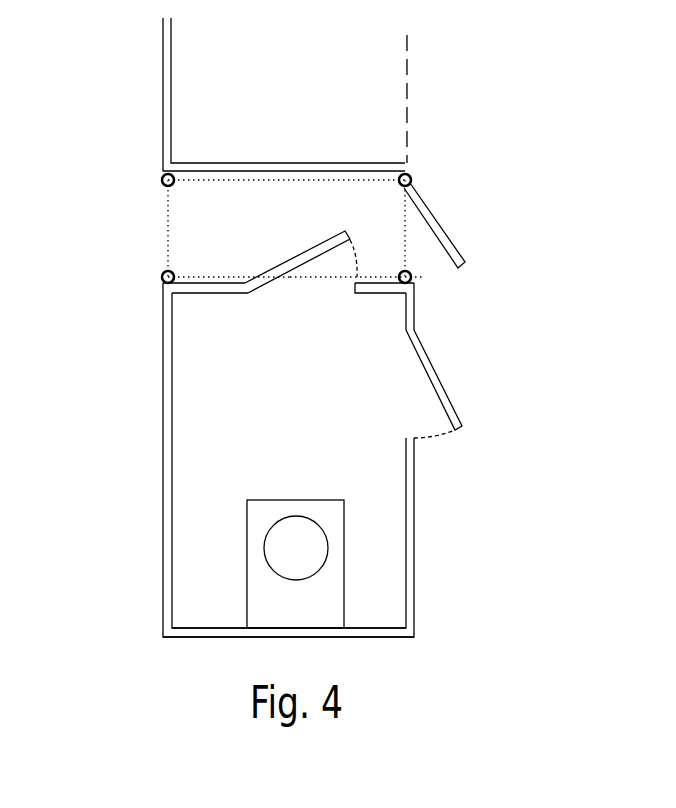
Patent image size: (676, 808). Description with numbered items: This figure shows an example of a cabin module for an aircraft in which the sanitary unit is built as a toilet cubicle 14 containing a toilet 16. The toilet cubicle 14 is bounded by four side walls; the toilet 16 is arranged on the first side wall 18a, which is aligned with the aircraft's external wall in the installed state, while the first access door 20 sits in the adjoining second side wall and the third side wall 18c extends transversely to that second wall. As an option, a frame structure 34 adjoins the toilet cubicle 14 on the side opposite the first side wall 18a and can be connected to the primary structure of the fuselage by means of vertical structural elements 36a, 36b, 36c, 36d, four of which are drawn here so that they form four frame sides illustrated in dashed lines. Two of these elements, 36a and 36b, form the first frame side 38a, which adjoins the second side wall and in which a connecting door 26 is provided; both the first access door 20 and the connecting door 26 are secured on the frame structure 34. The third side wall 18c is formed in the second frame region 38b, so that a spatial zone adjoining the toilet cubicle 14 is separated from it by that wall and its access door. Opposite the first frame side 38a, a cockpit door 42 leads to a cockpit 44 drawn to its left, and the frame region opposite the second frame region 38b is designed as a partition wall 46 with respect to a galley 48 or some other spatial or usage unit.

The toilet cubicle 14 is at (298, 433).
The toilet 16 is at (345, 532).
The first side wall 18a is at (212, 630).
The third side wall 18c is at (221, 295).
The first access door 20 is at (448, 392).
The connecting door 26 is at (442, 220).
The frame structure 34 is at (446, 197).
The vertical structural element 36a is at (413, 248).
The vertical structural element 36b is at (410, 175).
The vertical structural element 36c is at (163, 178).
The vertical structural element 36d is at (164, 284).
The first frame side 38a is at (413, 280).
The second frame region 38b is at (215, 276).
The cockpit door 42 is at (168, 208).
The cockpit 44 is at (125, 247).
The partition wall 46 is at (282, 181).
The galley 48 is at (320, 100).